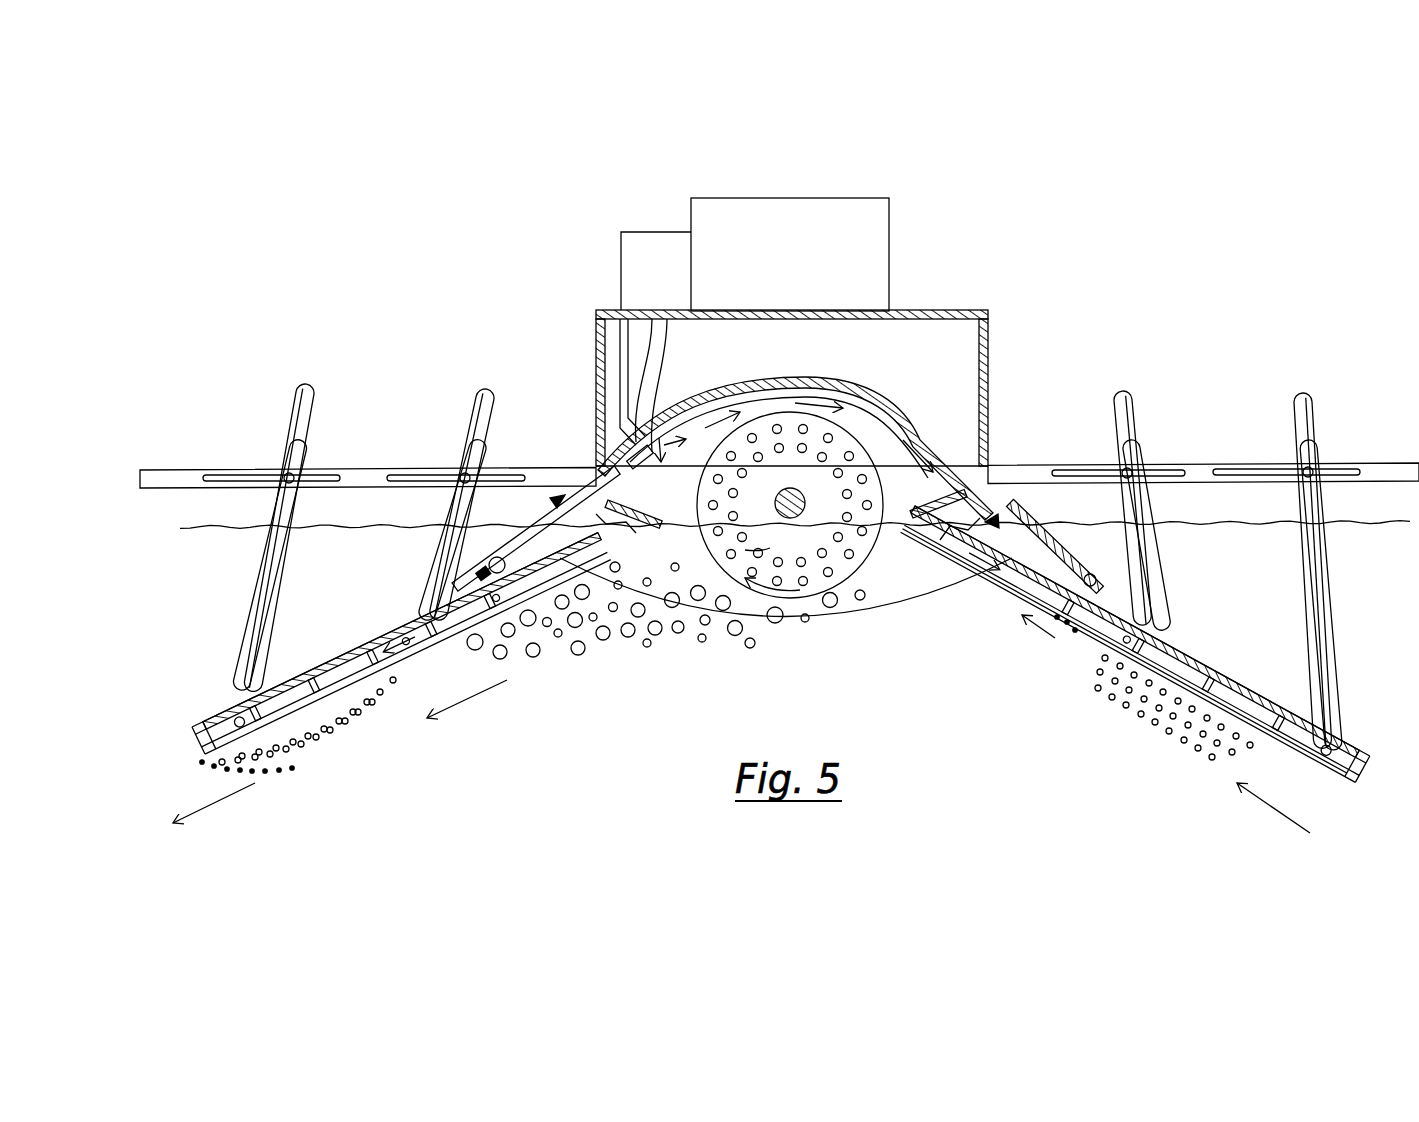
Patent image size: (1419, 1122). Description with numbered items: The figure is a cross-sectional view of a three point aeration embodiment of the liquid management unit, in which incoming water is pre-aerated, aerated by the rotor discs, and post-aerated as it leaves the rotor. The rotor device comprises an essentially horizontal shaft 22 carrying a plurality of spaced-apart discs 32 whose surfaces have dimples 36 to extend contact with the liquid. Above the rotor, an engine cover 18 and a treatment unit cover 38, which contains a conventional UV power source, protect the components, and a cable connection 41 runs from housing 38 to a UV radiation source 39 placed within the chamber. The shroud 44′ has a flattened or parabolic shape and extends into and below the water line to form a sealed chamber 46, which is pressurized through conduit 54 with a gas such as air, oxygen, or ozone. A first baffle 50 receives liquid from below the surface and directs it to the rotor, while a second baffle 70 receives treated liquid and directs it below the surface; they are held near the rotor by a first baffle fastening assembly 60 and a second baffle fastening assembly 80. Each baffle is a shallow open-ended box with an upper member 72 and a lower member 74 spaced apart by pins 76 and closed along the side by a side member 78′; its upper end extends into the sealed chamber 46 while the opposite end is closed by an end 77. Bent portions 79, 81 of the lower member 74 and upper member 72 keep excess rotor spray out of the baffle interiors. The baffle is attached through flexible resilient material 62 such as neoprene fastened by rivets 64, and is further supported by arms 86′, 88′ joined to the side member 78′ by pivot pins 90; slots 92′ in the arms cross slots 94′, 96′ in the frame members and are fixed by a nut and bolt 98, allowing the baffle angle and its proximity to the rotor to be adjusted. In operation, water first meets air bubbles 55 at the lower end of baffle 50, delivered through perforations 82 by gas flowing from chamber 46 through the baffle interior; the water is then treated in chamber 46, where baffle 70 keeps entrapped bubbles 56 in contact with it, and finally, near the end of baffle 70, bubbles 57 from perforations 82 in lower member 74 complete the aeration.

The engine cover 18 is at (880, 262).
The treatment unit cover 38 is at (632, 263).
The cable connection 41 is at (620, 346).
The conduit 54 is at (653, 372).
The UV radiation source 39 is at (612, 460).
The shroud 44′ is at (825, 381).
The sealed chamber 46 is at (873, 413).
The discs 32 is at (853, 558).
The shaft 22 is at (782, 492).
The dimples 36 is at (762, 553).
The slot 94′ is at (335, 476).
The slot 96′ is at (518, 476).
The nut and bolt 98 is at (287, 473).
The arm 86′ is at (315, 392).
The arm 88′ is at (487, 400).
The slot 92′ is at (268, 598).
The second baffle 70 is at (381, 622).
The first baffle 50 is at (1205, 645).
The upper member 72 is at (352, 650).
The lower member 74 is at (410, 655).
The pins 76 is at (303, 681).
The side member 78′ is at (1260, 700).
The pivot pins 90 is at (232, 715).
The ends 77 is at (200, 740).
The perforations 82 is at (352, 690).
The bubbles 57 is at (310, 765).
The air bubbles 55 is at (1172, 738).
The bent portion 79 is at (628, 510).
The bent portion 81 is at (615, 545).
The flexible resilient material 62 is at (510, 565).
The rivets 64 is at (556, 508).
The second baffle fastening assembly 80 is at (503, 546).
The first baffle fastening assembly 60 is at (1068, 563).
The bubbles 56 is at (650, 650).